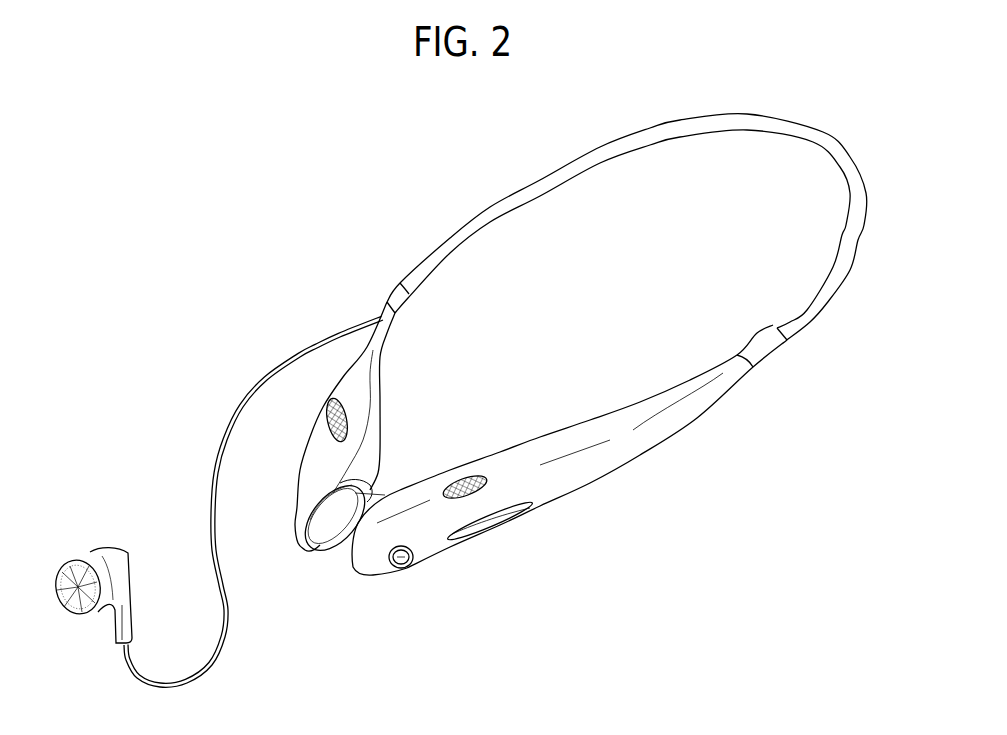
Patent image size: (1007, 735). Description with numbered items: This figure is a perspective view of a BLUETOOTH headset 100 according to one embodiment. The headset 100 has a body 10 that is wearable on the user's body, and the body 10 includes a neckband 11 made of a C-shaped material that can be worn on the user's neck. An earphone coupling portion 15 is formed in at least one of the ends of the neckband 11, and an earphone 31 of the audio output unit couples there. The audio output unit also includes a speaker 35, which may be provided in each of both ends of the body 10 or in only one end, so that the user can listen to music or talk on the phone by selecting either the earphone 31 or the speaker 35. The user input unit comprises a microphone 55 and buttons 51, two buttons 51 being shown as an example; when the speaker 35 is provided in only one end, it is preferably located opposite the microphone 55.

The BLUETOOTH headset 100 is at (378, 190).
The body 10 is at (487, 328).
The neckband 11 is at (443, 257).
The earphone coupling portion 15 is at (415, 482).
The earphone 31 is at (112, 558).
The speaker 35 is at (332, 413).
The button 51 is at (402, 562).
The microphone 55 is at (305, 550).